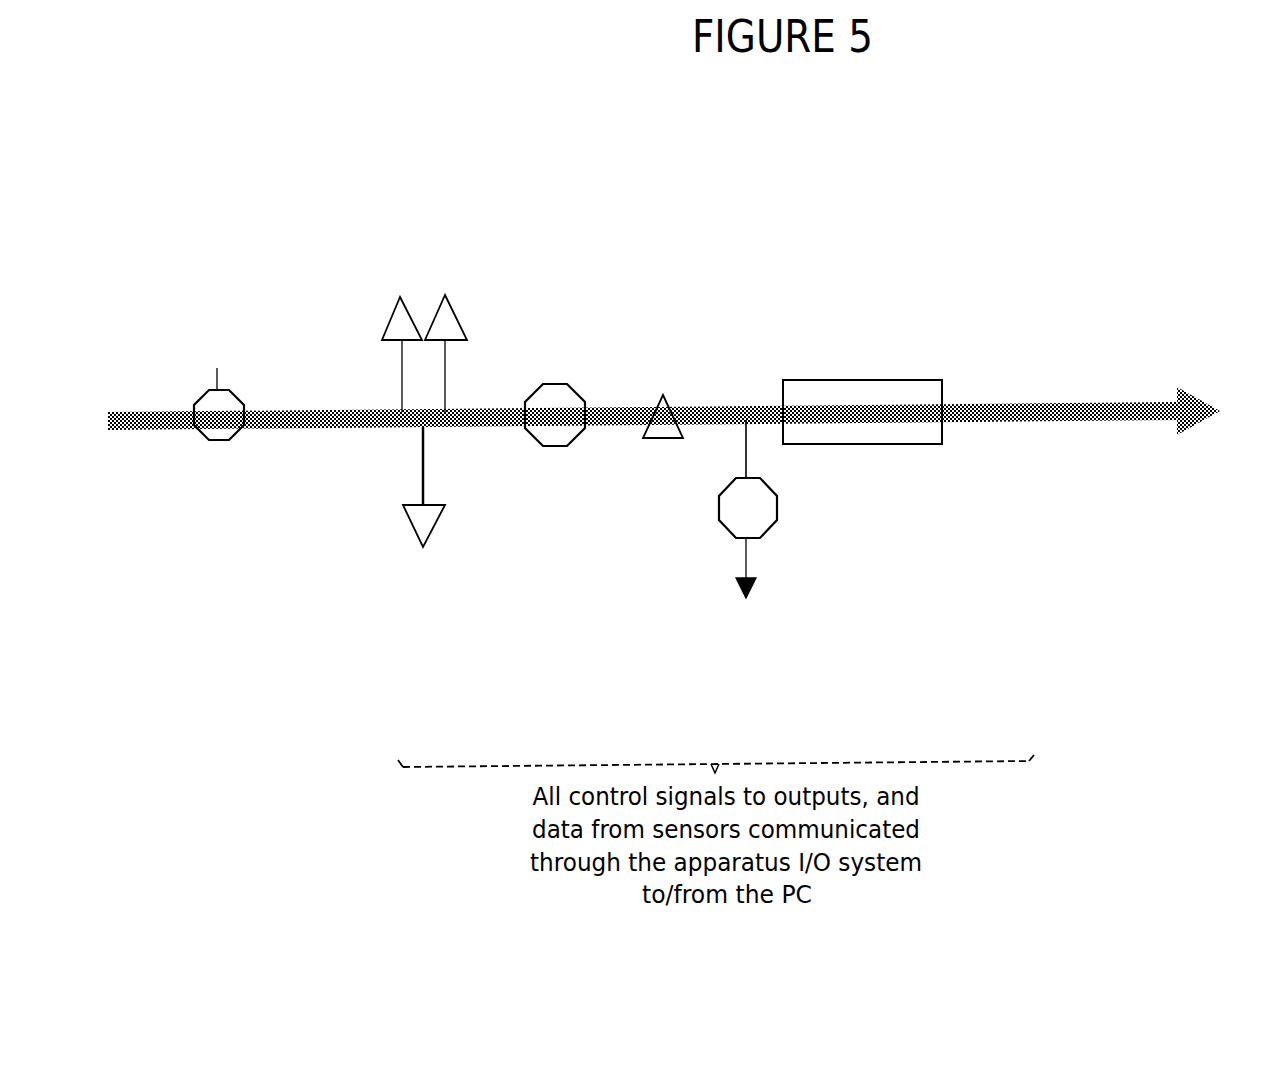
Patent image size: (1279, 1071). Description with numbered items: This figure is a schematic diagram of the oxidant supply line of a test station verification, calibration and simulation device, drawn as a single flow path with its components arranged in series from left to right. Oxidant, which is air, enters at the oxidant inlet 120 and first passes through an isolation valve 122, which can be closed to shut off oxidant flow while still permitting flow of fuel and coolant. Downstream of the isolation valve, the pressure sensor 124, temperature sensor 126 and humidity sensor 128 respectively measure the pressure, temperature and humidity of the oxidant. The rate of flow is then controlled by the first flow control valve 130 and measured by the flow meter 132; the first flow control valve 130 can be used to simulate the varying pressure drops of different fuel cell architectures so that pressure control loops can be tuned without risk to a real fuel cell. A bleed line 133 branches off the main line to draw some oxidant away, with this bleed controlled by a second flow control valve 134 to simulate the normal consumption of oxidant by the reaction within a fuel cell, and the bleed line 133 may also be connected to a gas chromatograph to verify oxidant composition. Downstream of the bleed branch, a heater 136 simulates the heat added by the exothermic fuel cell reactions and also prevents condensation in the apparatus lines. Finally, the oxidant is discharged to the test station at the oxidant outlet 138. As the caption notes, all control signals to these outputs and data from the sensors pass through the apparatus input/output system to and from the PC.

The oxidant inlet 120 is at (133, 412).
The isolation valve 122 is at (219, 380).
The pressure sensor 124 is at (390, 316).
The temperature sensor 126 is at (457, 315).
The humidity sensor 128 is at (415, 530).
The first flow control valve 130 is at (555, 384).
The flow meter 132 is at (659, 395).
The bleed line 133 is at (742, 445).
The second flow control valve 134 is at (770, 530).
The heater 136 is at (867, 380).
The oxidant outlet 138 is at (1205, 400).